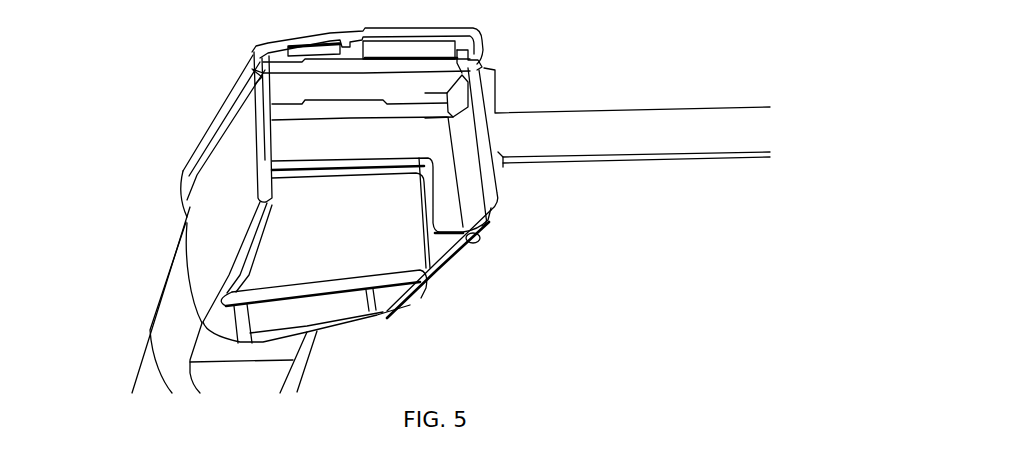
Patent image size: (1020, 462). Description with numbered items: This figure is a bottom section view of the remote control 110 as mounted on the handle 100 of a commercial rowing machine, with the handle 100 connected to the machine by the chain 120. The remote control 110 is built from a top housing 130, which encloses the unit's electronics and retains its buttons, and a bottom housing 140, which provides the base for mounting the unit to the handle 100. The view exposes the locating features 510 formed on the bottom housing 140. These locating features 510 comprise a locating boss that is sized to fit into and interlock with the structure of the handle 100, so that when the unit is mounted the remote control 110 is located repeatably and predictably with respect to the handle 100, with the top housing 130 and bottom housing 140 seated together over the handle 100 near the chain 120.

The handle 100 is at (500, 241).
The remote control 110 is at (200, 112).
The chain 120 is at (651, 121).
The top housing 130 is at (492, 39).
The bottom housing 140 is at (492, 63).
The locating features 510 is at (463, 127).